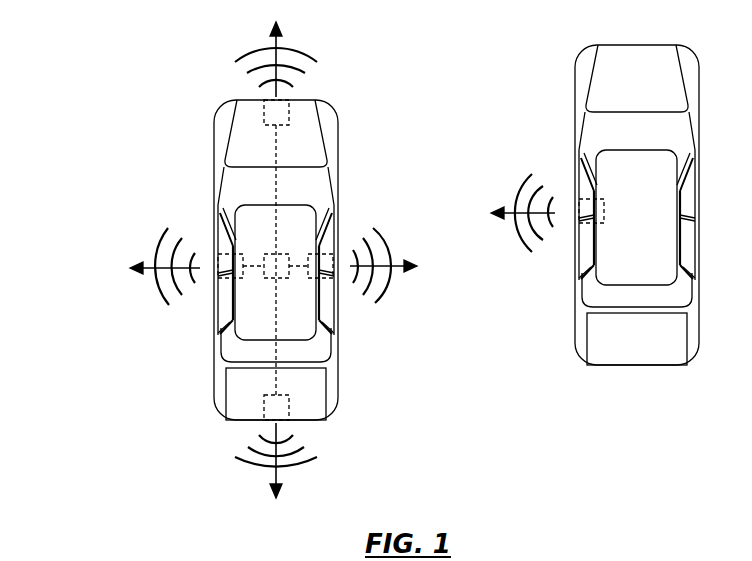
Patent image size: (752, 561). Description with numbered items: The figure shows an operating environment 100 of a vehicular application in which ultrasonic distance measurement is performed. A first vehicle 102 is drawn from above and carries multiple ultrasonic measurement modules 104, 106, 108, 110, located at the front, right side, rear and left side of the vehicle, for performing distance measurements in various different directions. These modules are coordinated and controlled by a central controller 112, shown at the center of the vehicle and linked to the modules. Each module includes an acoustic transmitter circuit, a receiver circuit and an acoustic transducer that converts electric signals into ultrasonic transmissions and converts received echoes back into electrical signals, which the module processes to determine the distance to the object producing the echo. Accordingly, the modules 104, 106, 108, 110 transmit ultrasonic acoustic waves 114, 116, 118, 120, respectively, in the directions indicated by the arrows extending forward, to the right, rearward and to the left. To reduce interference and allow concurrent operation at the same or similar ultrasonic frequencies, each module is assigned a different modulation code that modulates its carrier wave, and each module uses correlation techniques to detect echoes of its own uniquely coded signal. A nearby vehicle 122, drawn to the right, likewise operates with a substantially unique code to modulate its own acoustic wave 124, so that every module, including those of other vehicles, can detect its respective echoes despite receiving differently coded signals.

The operating environment 100 is at (31, 405).
The first vehicle 102 is at (213, 122).
The ultrasonic measurement module 104 is at (290, 123).
The ultrasonic measurement module 106 is at (322, 252).
The ultrasonic measurement module 108 is at (291, 408).
The ultrasonic measurement module 110 is at (222, 256).
The central controller 112 is at (285, 280).
The ultrasonic acoustic wave 114 is at (290, 48).
The ultrasonic acoustic wave 116 is at (392, 245).
The ultrasonic acoustic wave 118 is at (262, 477).
The ultrasonic acoustic wave 120 is at (156, 250).
The vehicle 122 is at (575, 73).
The acoustic wave 124 is at (518, 240).